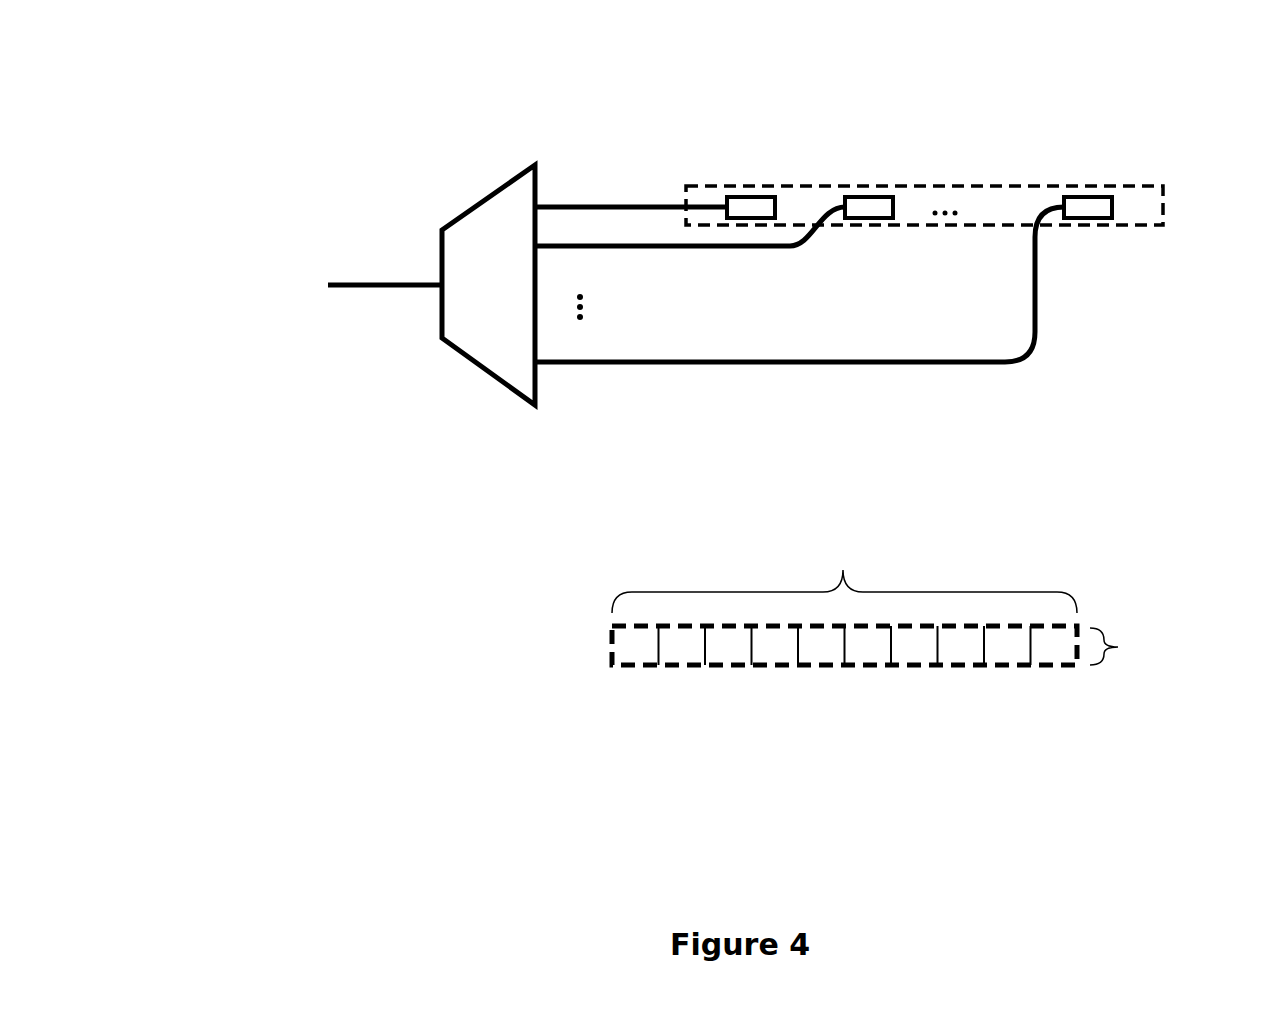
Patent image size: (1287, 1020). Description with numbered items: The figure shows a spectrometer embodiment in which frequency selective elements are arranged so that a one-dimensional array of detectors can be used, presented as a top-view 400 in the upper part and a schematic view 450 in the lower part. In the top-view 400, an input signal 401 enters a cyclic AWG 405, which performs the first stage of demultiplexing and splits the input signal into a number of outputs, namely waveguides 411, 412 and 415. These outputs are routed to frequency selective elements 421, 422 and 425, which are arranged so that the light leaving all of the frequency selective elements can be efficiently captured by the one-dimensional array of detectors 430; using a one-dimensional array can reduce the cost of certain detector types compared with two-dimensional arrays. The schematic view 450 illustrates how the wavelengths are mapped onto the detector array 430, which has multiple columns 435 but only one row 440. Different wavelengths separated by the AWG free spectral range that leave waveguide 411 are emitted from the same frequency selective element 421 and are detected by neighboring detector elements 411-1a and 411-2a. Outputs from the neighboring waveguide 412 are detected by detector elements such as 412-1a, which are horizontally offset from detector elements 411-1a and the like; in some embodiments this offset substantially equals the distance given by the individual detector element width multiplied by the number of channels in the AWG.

The top-view 400 is at (303, 92).
The input signal 401 is at (328, 273).
The cyclic AWG 405 is at (475, 197).
The output waveguide 411 is at (567, 207).
The output waveguide 412 is at (594, 246).
The output waveguide 415 is at (582, 365).
The frequency selective element 421 is at (728, 197).
The frequency selective element 422 is at (842, 200).
The frequency selective element 425 is at (1113, 207).
The 1D array of detectors 430 is at (995, 186).
The columns 435 is at (844, 602).
The row 440 is at (1135, 646).
The schematic view 450 is at (438, 565).
The detector element 411-1a is at (730, 648).
The detector element 411-2a is at (773, 653).
The detector element 412-1a is at (965, 647).